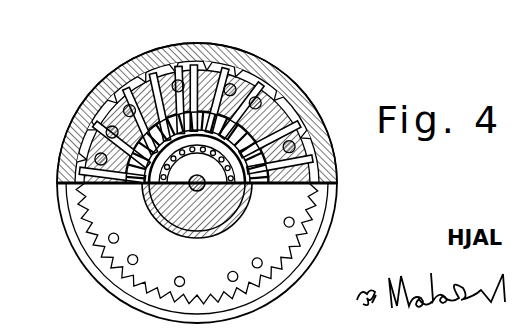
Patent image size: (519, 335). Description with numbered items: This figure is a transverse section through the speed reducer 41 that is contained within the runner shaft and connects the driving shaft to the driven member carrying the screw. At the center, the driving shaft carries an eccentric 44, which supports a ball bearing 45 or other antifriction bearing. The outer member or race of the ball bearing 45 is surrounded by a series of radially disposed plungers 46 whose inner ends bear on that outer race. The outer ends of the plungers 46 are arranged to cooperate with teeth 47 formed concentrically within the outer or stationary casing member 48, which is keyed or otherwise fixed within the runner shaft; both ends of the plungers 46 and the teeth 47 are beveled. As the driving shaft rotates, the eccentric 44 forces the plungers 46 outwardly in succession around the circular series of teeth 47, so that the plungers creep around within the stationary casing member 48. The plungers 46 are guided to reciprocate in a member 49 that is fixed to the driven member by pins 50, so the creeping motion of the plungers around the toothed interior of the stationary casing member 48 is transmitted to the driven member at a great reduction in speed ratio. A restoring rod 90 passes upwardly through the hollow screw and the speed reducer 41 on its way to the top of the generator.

The speed reducer 41 is at (212, 183).
The eccentric 44 is at (244, 214).
The ball bearing 45 is at (272, 108).
The plungers 46 is at (257, 82).
The teeth 47 is at (240, 60).
The stationary casing member 48 is at (322, 213).
The guide member 49 is at (136, 64).
The pins 50 is at (85, 152).
The restoring rod 90 is at (213, 238).